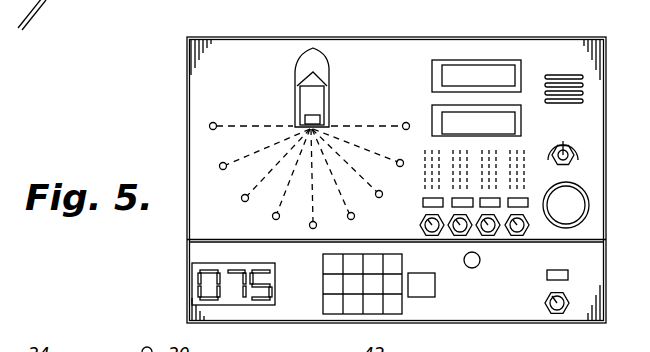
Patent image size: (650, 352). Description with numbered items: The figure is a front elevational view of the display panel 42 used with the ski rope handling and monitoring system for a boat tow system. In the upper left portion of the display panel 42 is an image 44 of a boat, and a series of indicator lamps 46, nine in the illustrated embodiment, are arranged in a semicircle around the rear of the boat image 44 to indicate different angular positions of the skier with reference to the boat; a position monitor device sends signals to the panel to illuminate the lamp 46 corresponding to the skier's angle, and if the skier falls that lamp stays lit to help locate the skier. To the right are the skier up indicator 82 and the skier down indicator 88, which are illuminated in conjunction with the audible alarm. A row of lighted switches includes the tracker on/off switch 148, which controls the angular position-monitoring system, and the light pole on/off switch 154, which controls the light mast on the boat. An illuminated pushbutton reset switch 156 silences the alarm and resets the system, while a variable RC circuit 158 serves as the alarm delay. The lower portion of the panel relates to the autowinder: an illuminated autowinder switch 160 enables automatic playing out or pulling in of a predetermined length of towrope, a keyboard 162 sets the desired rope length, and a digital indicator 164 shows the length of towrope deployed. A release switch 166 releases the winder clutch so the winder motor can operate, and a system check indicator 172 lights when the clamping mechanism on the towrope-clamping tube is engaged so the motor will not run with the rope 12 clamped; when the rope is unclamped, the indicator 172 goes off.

The rope 12 is at (46, 6).
The display panel 42 is at (503, 39).
The image of a boat 44 is at (330, 86).
The indicator lamps 46 is at (221, 169).
The skier up indicator 82 is at (510, 72).
The skier down indicator 88 is at (442, 115).
The tracker on/off switch 148 is at (420, 226).
The light pole on/off switch 154 is at (528, 232).
The pushbutton reset switch 156 is at (584, 222).
The variable RC circuit 158 is at (577, 152).
The autowinder switch 160 is at (566, 312).
The keyboard 162 is at (402, 258).
The digital indicator 164 is at (190, 278).
The release switch 166 is at (422, 297).
The system check indicator 172 is at (481, 260).